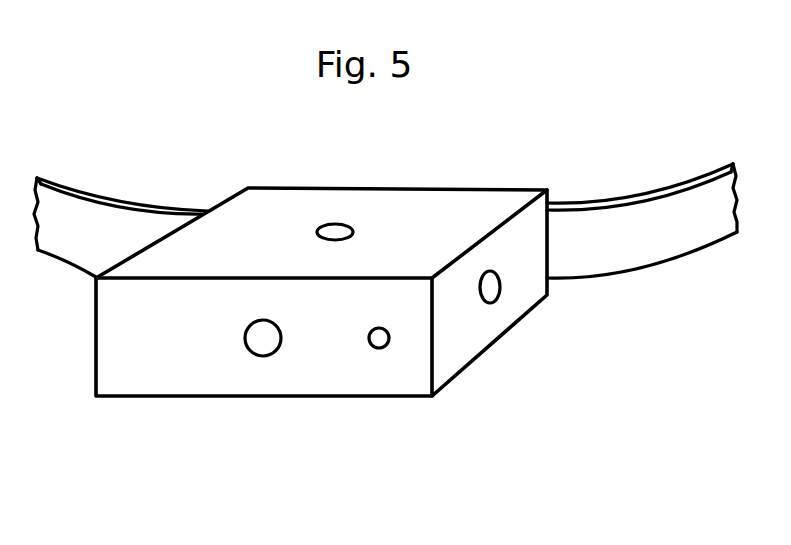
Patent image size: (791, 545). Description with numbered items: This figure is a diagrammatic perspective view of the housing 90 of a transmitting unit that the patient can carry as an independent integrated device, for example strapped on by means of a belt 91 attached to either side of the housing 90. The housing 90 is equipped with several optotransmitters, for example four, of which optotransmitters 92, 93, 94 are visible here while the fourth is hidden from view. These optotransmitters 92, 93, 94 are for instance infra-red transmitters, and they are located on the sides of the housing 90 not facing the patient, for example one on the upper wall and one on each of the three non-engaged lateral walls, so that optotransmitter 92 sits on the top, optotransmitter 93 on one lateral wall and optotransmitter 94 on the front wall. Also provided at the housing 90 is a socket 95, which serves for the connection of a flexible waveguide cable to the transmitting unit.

The housing 90 is at (470, 203).
The belt 91 is at (646, 220).
The optotransmitter 92 is at (335, 232).
The optotransmitter 93 is at (493, 290).
The optotransmitter 94 is at (261, 346).
The socket 95 is at (378, 348).